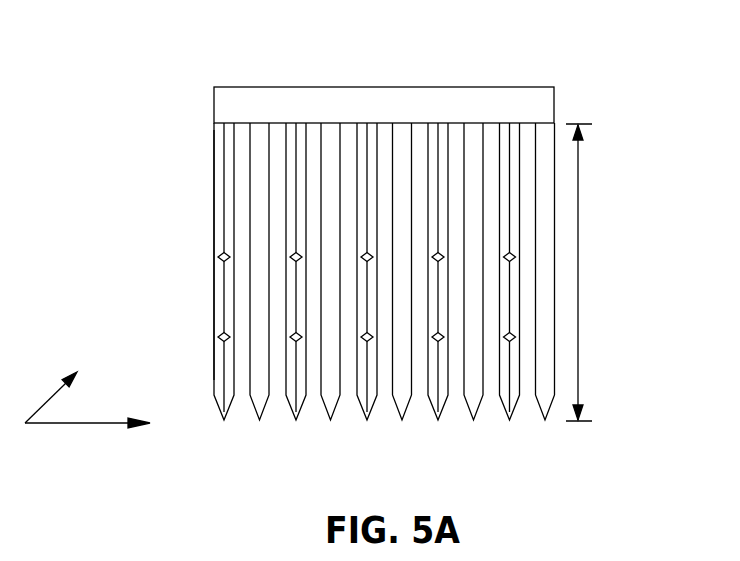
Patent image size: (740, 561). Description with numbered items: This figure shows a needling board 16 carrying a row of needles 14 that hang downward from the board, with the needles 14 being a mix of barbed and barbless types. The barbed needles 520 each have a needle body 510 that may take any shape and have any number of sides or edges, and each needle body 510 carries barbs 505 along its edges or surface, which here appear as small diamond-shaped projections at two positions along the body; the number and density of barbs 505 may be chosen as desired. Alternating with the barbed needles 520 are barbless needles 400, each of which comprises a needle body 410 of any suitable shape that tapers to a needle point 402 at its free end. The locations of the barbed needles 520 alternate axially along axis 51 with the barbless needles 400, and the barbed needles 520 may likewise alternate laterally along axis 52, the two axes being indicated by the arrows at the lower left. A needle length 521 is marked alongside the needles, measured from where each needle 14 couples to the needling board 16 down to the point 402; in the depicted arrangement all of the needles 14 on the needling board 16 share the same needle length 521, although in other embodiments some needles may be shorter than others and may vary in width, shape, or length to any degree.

The needles 14 is at (367, 260).
The needling board 16 is at (232, 105).
The barbless needle 400 is at (437, 257).
The point 402 is at (589, 302).
The needle body 410 is at (545, 218).
The barbs 505 is at (311, 305).
The needle body 510 is at (216, 178).
The barbed needle 520 is at (224, 402).
The needle length 521 is at (578, 280).
The axis 51 is at (98, 434).
The axis 52 is at (51, 388).